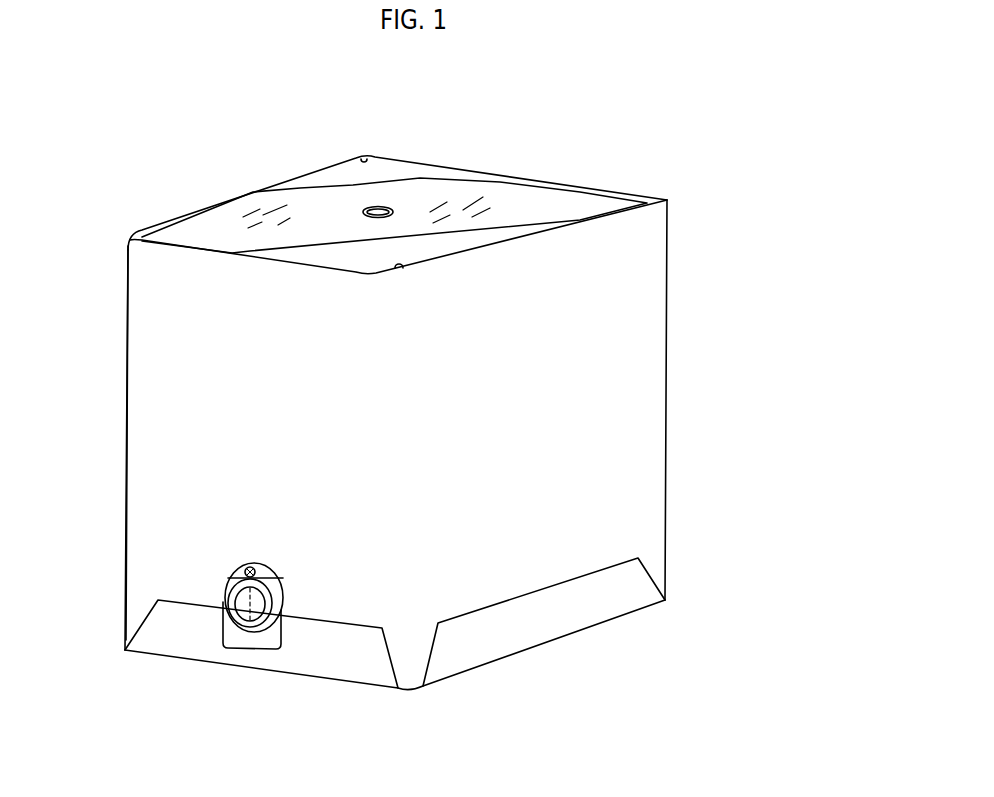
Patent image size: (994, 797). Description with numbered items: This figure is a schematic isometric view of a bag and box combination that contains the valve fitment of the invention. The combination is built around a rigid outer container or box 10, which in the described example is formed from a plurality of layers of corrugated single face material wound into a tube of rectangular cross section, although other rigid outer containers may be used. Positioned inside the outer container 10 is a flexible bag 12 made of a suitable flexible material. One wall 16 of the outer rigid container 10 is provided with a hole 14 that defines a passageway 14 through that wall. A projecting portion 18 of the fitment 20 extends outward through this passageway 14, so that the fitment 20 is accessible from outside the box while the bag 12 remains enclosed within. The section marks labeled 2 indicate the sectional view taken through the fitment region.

The rigid outer container 10 is at (668, 199).
The flexible bag 12 is at (495, 188).
The hole 14 is at (288, 610).
The wall 16 is at (255, 370).
The projecting portion 18 is at (217, 631).
The fitment 20 is at (238, 573).
The section line 2- 2 is at (248, 557).